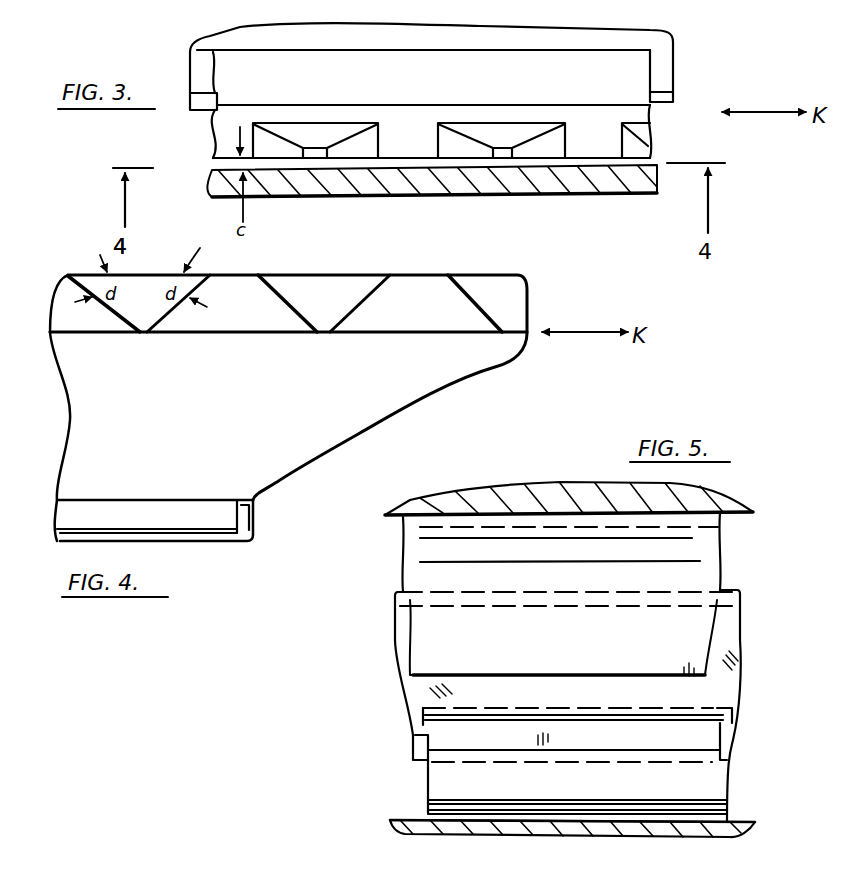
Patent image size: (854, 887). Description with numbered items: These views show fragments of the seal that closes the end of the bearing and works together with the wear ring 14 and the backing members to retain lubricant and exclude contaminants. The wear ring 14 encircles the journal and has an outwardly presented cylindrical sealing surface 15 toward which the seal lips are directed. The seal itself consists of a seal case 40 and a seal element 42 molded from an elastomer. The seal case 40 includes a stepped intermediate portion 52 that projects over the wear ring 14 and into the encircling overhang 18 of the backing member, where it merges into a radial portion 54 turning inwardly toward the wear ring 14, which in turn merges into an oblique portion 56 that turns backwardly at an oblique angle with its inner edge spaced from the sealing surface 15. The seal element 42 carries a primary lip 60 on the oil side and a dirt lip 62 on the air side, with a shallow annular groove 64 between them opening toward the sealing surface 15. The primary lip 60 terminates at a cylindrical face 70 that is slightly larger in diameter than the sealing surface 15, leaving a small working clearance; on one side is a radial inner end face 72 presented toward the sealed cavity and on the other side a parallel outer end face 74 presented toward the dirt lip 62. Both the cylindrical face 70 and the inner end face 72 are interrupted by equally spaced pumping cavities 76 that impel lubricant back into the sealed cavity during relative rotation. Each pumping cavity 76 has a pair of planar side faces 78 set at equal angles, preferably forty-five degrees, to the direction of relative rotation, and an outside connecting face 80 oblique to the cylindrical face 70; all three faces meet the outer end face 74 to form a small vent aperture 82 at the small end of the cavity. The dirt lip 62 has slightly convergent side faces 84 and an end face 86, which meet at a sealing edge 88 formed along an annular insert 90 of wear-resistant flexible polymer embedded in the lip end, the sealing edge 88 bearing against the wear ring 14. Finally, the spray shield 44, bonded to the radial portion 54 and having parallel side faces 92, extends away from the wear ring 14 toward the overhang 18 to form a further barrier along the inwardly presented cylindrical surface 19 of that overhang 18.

In FIG. 3, the wear ring 14 is at (637, 187).
In FIG. 3, the sealing surface 15 is at (653, 165).
In FIG. 5, the sealing surface 15 is at (407, 817).
In FIG. 5, the overhang 18 is at (535, 484).
In FIG. 5, the inwardly presented surface 19 is at (738, 514).
In FIG. 3, the seal case 40 is at (686, 50).
In FIG. 5, the seal case 40 is at (392, 660).
In FIG. 3, the seal element 42 is at (206, 136).
In FIG. 5, the seal element 42 is at (740, 762).
In FIG. 5, the spray shield 44 is at (398, 572).
In FIG. 5, the stepped intermediate portion 52 is at (400, 593).
In FIG. 3, the radial portion 54 is at (207, 42).
In FIG. 5, the radial portion 54 is at (417, 690).
In FIG. 3, the oblique portion 56 is at (668, 80).
In FIG. 5, the oblique portion 56 is at (413, 737).
In FIG. 3, the primary lip 60 is at (220, 145).
In FIG. 4, the primary lip 60 is at (460, 320).
In FIG. 4, the dirt lip 62 is at (296, 462).
In FIG. 5, the dirt lip 62 is at (710, 788).
In FIG. 4, the shallow annular groove 64 is at (88, 404).
In FIG. 4, the cylindrical face 70 is at (403, 320).
In FIG. 3, the inner end face 72 is at (409, 118).
In FIG. 4, the outer end face 74 is at (235, 335).
In FIG. 3, the pumping cavities 76 is at (357, 148).
In FIG. 4, the pumping cavities 76 is at (145, 285).
In FIG. 3, the side faces 78 is at (456, 146).
In FIG. 4, the side faces 78 is at (277, 288).
In FIG. 3, the connecting face 80 is at (500, 130).
In FIG. 3, the vent aperture 82 is at (503, 152).
In FIG. 4, the vent aperture 82 is at (140, 335).
In FIG. 4, the side faces 84 is at (355, 413).
In FIG. 4, the end face 86 is at (200, 543).
In FIG. 4, the sealing edge 88 is at (213, 537).
In FIG. 5, the sealing edge 88 is at (482, 822).
In FIG. 4, the annular insert 90 is at (137, 503).
In FIG. 5, the annular insert 90 is at (553, 813).
In FIG. 5, the side faces 92 is at (707, 575).